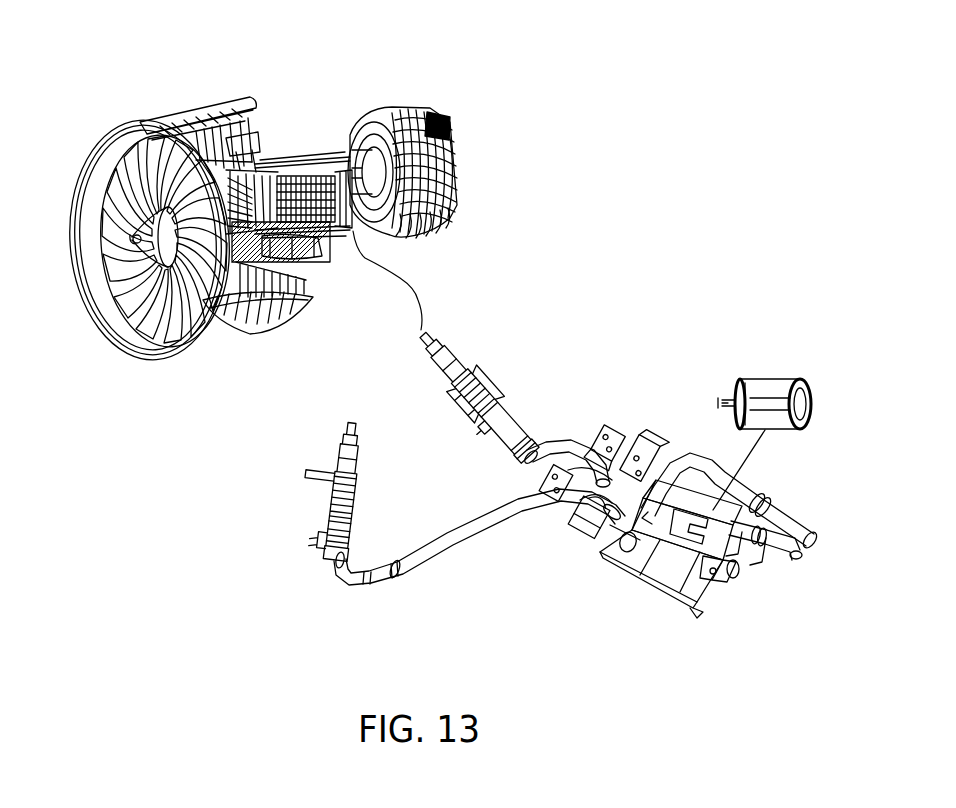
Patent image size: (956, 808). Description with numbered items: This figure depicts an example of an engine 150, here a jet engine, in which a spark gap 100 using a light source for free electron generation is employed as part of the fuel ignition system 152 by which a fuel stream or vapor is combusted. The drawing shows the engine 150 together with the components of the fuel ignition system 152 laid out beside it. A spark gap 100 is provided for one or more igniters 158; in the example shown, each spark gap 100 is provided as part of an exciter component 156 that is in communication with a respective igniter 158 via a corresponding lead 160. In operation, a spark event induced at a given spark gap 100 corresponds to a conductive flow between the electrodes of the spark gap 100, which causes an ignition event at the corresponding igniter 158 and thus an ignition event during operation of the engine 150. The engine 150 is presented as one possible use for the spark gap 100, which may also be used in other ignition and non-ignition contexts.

The engine 150 is at (237, 62).
The fuel ignition system 152 is at (473, 594).
The exciter component 156 is at (648, 418).
The igniter 158 is at (422, 340).
The lead 160 is at (457, 533).
The spark gap 100 is at (768, 352).